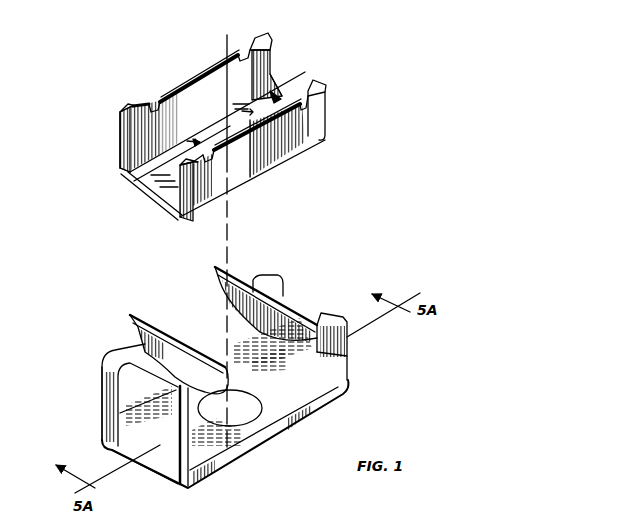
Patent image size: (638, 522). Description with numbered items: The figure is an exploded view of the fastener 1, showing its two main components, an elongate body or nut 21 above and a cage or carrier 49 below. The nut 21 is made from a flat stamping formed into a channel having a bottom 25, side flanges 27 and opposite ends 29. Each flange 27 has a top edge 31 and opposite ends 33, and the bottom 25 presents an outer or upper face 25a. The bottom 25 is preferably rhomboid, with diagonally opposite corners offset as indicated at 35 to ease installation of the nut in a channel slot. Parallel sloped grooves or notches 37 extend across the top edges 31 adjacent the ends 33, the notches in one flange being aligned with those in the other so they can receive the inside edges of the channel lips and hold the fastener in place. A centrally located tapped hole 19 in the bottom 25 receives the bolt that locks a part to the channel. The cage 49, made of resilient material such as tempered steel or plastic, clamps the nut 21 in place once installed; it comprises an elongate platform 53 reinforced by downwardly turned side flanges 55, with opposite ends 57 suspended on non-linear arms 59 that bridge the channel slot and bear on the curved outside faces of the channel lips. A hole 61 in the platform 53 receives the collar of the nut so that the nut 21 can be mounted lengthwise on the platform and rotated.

The fastener 1 is at (398, 170).
The tapped hole 19 is at (140, 170).
The elongate body or nut 21 is at (217, 224).
The bottom 25 is at (285, 88).
The outer (upper) face 25a is at (259, 37).
The side flanges 27 is at (190, 98).
The opposite ends 29 is at (278, 95).
The top edge 31 is at (217, 62).
The opposite ends 33 is at (285, 36).
The offset corners 35 is at (120, 168).
The grooves or notches 37 is at (152, 104).
The cage or carrier 49 is at (223, 364).
The elongate platform 53 is at (318, 392).
The downwardly turned side flanges 55 is at (254, 455).
The opposite ends 57 is at (348, 383).
The non-linear arms 59 is at (251, 268).
The hole 61 is at (265, 432).